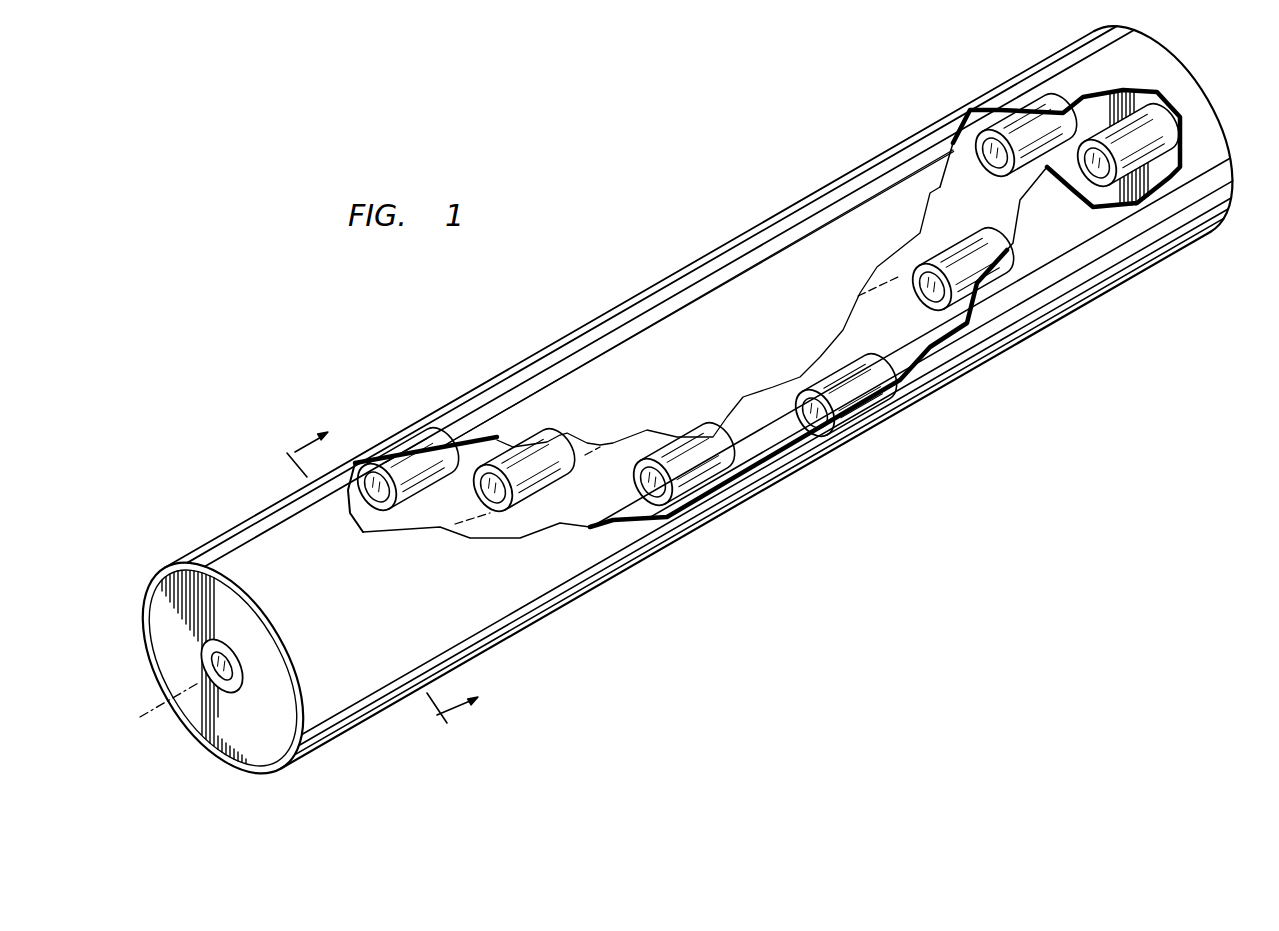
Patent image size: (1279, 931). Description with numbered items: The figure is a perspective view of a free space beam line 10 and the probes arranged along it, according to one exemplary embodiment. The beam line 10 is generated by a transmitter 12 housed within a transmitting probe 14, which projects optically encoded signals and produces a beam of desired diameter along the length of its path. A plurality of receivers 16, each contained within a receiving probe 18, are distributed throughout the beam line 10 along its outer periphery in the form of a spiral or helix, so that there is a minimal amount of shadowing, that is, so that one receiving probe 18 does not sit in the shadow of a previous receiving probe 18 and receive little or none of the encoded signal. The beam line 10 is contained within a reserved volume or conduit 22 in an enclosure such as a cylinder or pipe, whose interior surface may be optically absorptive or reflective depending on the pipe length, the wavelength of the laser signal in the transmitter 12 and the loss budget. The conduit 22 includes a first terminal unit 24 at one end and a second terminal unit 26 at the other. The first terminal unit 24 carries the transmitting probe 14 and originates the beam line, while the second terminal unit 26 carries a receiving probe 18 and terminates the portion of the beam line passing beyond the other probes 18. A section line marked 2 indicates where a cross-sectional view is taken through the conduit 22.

The section line 2- 2 is at (376, 586).
The free space beam line 10 is at (580, 460).
The transmitter 12 is at (218, 664).
The transmitting probe 14 is at (238, 686).
The receiver 16 is at (488, 492).
The receiving probe 18 is at (430, 486).
The conduit 22 is at (741, 367).
The first terminal unit 24 is at (270, 740).
The second terminal unit 26 is at (1168, 136).